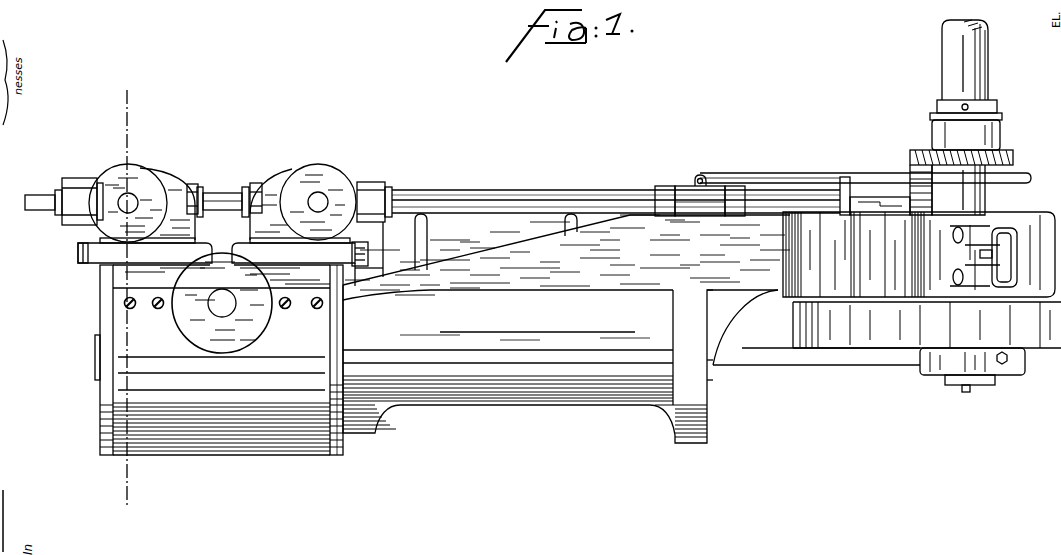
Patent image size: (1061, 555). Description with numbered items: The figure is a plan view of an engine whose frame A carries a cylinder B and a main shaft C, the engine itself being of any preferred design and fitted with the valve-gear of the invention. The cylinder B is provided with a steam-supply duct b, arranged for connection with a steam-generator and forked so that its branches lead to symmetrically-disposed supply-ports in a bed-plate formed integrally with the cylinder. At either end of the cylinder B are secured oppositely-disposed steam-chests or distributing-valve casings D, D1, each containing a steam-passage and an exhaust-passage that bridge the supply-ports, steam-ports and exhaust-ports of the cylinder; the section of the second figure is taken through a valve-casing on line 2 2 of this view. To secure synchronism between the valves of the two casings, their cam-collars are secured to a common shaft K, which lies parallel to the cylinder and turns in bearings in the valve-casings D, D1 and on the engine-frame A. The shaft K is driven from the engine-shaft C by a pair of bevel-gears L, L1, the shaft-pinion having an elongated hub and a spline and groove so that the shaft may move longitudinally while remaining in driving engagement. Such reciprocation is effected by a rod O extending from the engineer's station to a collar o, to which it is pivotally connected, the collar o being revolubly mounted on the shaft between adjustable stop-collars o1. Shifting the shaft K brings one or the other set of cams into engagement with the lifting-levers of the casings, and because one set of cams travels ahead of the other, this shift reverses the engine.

The section line 2 2 is at (126, 301).
The valve-casing D is at (157, 173).
The distributing-valve casing D1 is at (312, 167).
The common shaft K is at (213, 193).
The cylinder B is at (100, 328).
The steam-supply duct b is at (210, 307).
The engine-frame A is at (631, 329).
The collar o is at (687, 186).
The adjustable stop-collars o1 is at (738, 166).
The rod O is at (776, 173).
The bevel-gear L is at (912, 172).
The bevel-gear L1 is at (932, 145).
The main shaft C is at (957, 50).